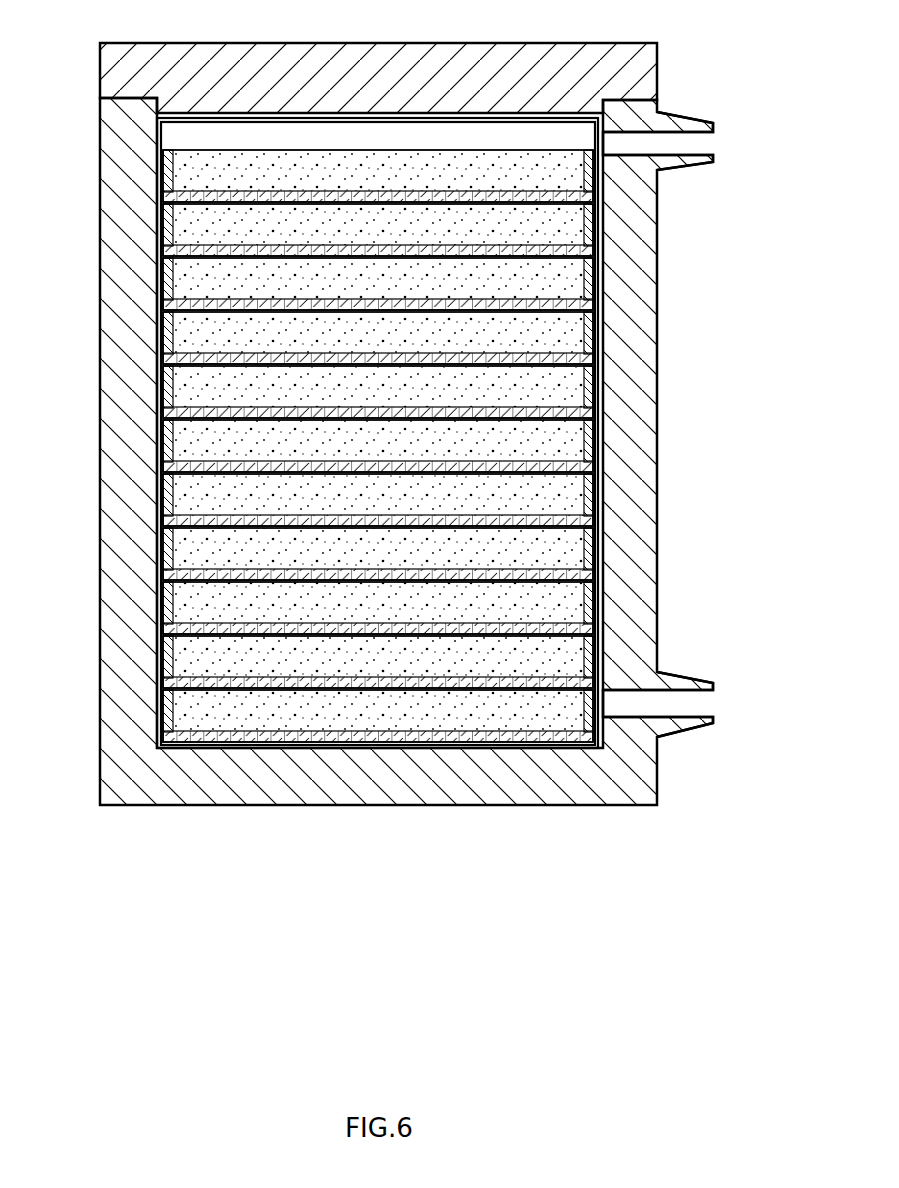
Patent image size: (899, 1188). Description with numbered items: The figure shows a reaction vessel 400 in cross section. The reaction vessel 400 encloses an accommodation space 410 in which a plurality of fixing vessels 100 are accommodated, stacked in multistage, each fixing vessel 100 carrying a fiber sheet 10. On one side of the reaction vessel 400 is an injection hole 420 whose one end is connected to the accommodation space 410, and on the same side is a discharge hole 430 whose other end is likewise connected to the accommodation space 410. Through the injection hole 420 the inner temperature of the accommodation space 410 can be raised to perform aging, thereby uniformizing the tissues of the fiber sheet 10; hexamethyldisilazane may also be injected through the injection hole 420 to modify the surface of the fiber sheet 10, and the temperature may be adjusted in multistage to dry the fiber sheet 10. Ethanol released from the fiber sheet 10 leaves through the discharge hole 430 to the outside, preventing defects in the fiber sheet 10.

The reaction vessel 400 is at (713, 83).
The accommodation space 410 is at (596, 372).
The injection hole 420 is at (705, 122).
The discharge hole 430 is at (705, 684).
The fixing vessel 100 is at (168, 731).
The fiber sheet 10 is at (458, 717).